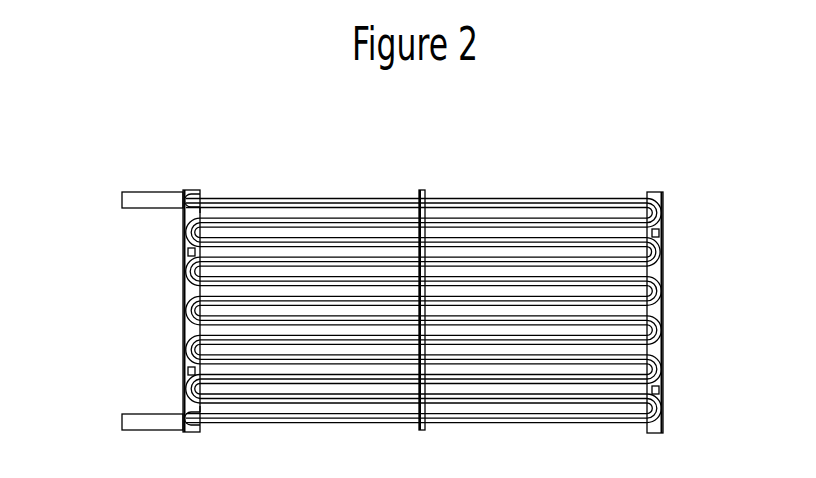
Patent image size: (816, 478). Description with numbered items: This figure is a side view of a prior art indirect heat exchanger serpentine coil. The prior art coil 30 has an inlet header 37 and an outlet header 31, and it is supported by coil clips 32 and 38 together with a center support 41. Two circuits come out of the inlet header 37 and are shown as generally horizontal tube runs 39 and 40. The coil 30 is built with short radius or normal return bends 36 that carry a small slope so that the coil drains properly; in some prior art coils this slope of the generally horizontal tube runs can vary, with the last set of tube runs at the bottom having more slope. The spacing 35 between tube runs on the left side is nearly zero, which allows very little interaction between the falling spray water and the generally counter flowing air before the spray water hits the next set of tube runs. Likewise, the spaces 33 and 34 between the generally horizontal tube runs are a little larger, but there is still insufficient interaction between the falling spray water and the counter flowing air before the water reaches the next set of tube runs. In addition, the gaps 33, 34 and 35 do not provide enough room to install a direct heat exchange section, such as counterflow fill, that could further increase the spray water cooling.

The prior art coil 30 is at (176, 186).
The outlet header 31 is at (122, 420).
The coil clip 32 is at (186, 373).
The space between tube runs 33 is at (637, 352).
The space between tube runs 34 is at (198, 330).
The spacing between tube runs 35 is at (187, 265).
The return bend 36 is at (663, 248).
The inlet header 37 is at (122, 197).
The coil clip 38 is at (663, 197).
The tube run 39 is at (257, 205).
The tube run 40 is at (308, 200).
The center support 41 is at (421, 191).